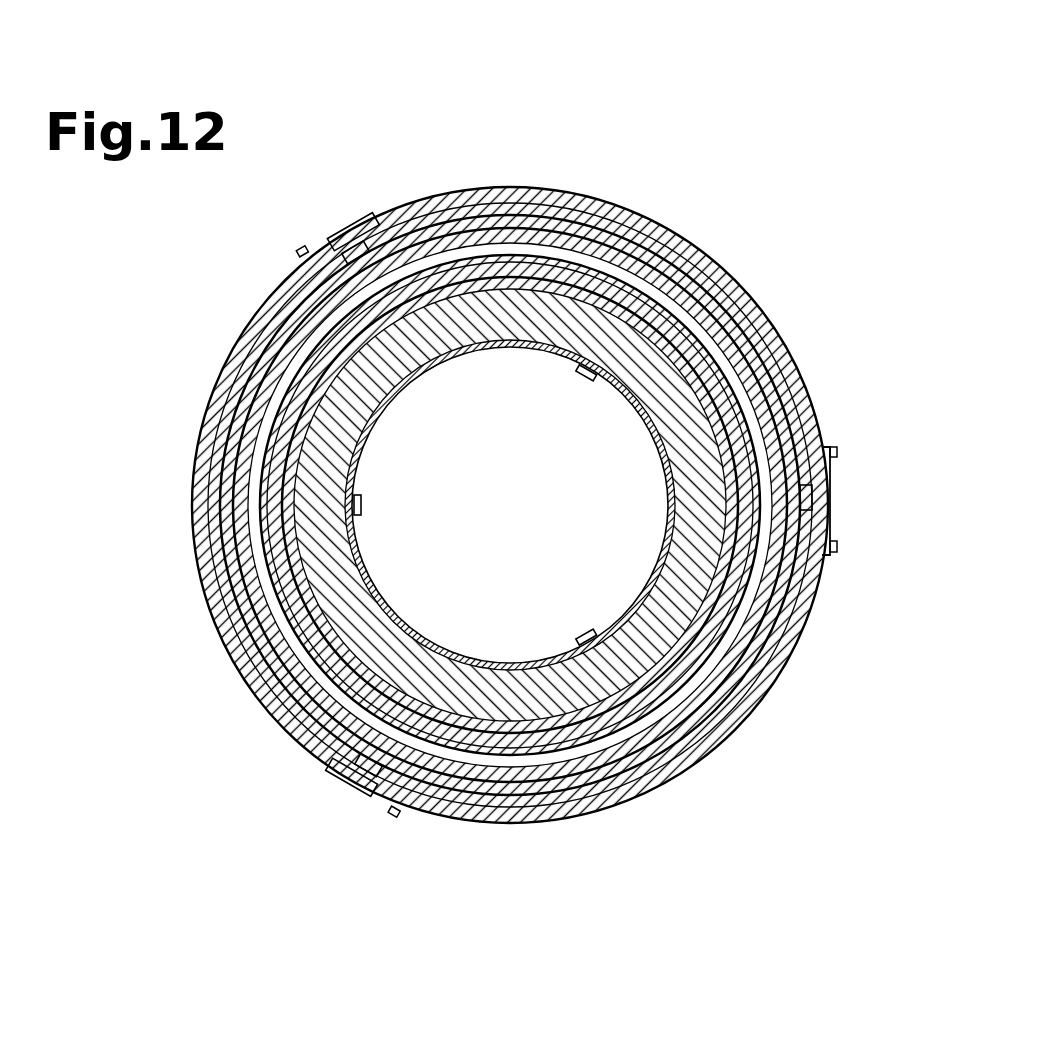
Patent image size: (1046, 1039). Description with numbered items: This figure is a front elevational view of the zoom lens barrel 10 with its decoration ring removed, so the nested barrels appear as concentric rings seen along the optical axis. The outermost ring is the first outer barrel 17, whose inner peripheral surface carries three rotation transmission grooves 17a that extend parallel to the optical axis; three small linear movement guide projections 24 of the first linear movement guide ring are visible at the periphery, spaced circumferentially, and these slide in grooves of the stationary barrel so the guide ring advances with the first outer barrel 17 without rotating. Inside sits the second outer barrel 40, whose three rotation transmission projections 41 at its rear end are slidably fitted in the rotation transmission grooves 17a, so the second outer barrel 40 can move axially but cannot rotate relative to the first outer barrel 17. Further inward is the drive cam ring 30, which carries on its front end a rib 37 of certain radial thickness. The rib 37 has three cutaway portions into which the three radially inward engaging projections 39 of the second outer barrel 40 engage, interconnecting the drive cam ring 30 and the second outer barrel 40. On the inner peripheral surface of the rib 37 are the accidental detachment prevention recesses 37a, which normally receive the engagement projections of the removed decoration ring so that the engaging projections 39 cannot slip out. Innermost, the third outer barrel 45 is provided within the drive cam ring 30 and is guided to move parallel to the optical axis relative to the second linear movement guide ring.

The zoom lens barrel 10 is at (175, 278).
The first outer barrel 17 is at (540, 186).
The rotation transmission grooves 17a is at (330, 257).
The linear movement guide projections 24 is at (347, 220).
The drive cam ring 30 is at (570, 270).
The rib 37 is at (539, 200).
The accidental detachment prevention recesses 37a is at (335, 420).
The engaging projections 39 is at (705, 266).
The second outer barrel 40 is at (650, 251).
The rotation transmission projections 41 is at (372, 250).
The third outer barrel 45 is at (507, 310).